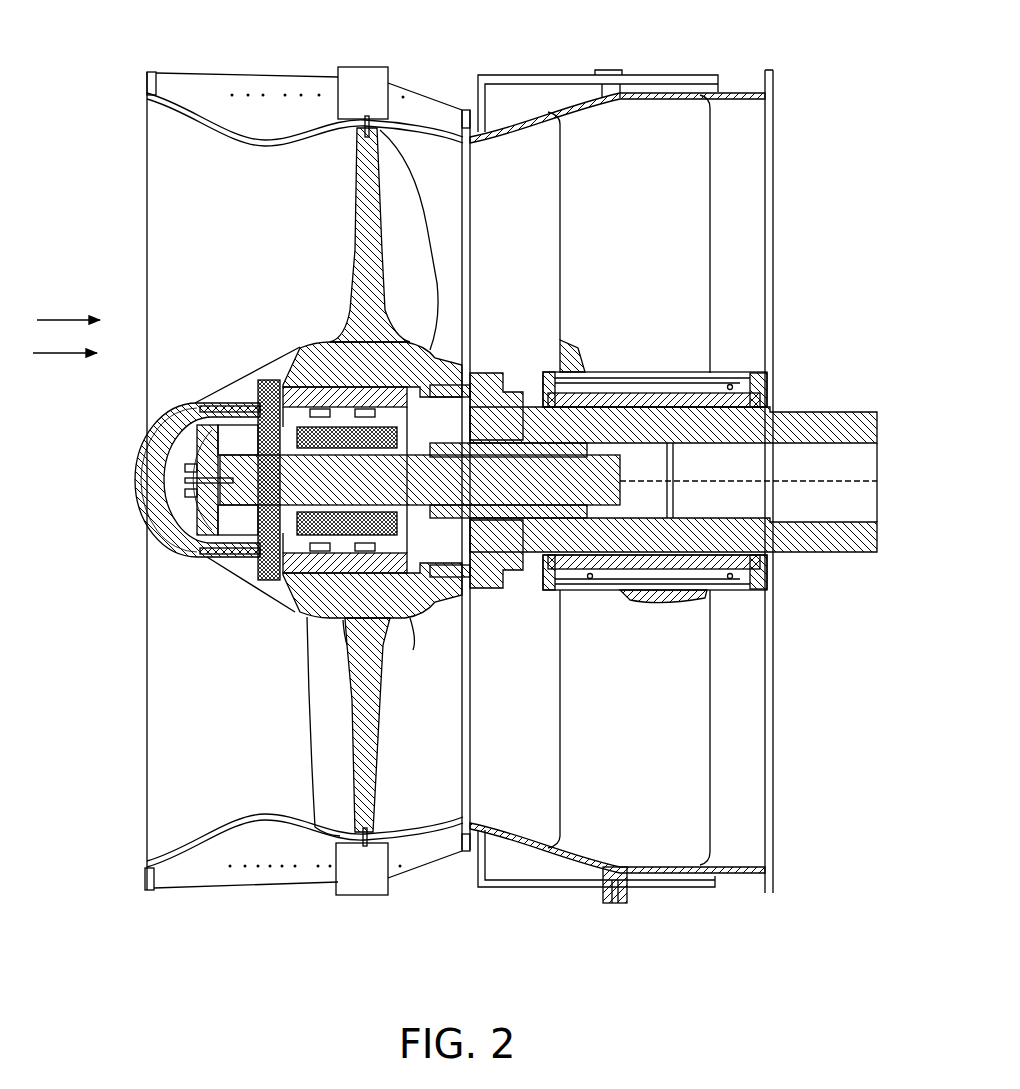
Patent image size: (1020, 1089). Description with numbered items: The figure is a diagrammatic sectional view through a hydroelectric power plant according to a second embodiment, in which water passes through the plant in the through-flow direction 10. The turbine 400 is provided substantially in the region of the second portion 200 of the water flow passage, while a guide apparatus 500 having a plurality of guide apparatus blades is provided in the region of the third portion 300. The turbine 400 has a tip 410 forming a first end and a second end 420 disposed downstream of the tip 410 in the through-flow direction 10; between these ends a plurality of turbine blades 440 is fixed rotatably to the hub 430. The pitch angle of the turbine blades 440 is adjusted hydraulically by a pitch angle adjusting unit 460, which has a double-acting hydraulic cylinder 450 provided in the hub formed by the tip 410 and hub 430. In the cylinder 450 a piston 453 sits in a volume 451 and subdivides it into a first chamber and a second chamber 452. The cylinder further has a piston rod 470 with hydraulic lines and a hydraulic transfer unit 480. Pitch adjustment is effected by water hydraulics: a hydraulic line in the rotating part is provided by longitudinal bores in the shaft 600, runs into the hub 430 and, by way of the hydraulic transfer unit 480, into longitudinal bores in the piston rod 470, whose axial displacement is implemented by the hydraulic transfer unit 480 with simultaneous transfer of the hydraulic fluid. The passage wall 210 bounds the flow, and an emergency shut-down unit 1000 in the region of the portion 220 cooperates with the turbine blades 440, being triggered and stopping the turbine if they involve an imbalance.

The through-flow direction 10 is at (58, 320).
The second portion 200 is at (283, 92).
The duct inner wall 210 is at (190, 125).
The portion 220 is at (323, 128).
The third portion 300 is at (740, 92).
The turbine 400 is at (200, 240).
The tip 410 is at (140, 450).
The second end 420 is at (490, 375).
The hub 430 is at (445, 372).
The turbine blades 440 is at (360, 194).
The double-acting hydraulic cylinder 450 is at (172, 553).
The volume 451 is at (157, 487).
The second chamber 452 is at (232, 437).
The piston 453 is at (207, 562).
The pitch angle adjusting unit 460 is at (305, 600).
The piston rod 470 is at (440, 605).
The hydraulic transfer unit 480 is at (577, 580).
The guide apparatus 500 is at (670, 190).
The shaft 600 is at (822, 432).
The emergency shut-down unit 1000 is at (388, 78).